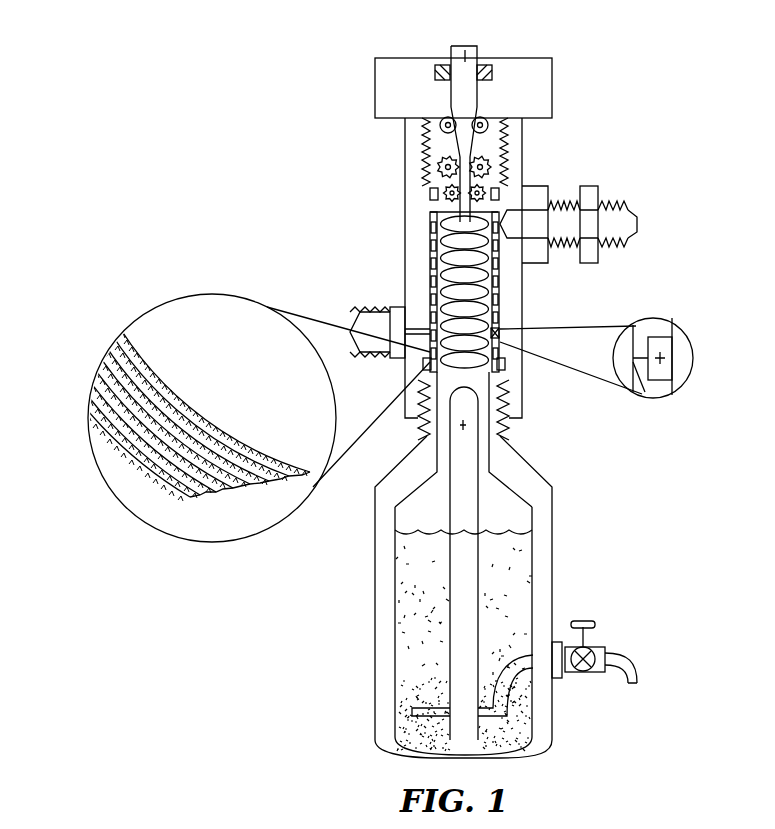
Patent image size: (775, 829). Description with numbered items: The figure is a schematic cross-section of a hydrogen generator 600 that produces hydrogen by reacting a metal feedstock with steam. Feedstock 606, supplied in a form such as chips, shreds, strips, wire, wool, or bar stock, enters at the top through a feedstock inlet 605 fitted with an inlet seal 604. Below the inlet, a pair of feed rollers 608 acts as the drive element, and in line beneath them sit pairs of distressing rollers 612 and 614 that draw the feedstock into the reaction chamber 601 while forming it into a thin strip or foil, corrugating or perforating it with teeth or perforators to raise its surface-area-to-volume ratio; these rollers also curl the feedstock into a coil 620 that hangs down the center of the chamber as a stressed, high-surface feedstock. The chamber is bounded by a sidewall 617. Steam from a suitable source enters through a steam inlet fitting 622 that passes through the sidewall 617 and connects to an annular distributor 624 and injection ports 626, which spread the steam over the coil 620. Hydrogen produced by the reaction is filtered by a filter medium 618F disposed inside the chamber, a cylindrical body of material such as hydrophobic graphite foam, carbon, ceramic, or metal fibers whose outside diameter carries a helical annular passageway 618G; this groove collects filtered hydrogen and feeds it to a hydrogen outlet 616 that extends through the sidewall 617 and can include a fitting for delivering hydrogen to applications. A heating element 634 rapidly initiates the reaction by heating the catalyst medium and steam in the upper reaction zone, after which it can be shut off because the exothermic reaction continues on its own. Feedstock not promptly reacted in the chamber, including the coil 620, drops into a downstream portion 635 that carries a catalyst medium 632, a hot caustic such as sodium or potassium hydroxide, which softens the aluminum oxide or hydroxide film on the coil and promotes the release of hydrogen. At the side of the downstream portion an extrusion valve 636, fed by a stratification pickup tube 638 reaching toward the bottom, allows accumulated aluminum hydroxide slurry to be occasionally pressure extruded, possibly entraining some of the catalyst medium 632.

The hydrogen generator 600 is at (336, 86).
The reaction chamber 601 is at (483, 386).
The inlet seal 604 is at (495, 70).
The feedstock inlet 605 is at (452, 48).
The feedstock 606 is at (470, 58).
The feed rollers 608 is at (487, 116).
The distressing rollers 612 is at (491, 158).
The distressing rollers 614 is at (486, 186).
The hydrogen outlet 616 is at (602, 189).
The sidewall 617 is at (418, 193).
The filter medium 618F is at (430, 246).
The helical annular passageway 618G is at (500, 283).
The coil 620 is at (433, 225).
The steam inlet fitting 622 is at (370, 318).
The annular distributor 624 is at (501, 332).
The injection ports 626 is at (501, 344).
The catalyst medium 632 is at (415, 650).
The heating element 634 is at (458, 423).
The downstream portion 635 is at (366, 607).
The extrusion valve 636 is at (609, 647).
The stratification pickup tube 638 is at (505, 712).